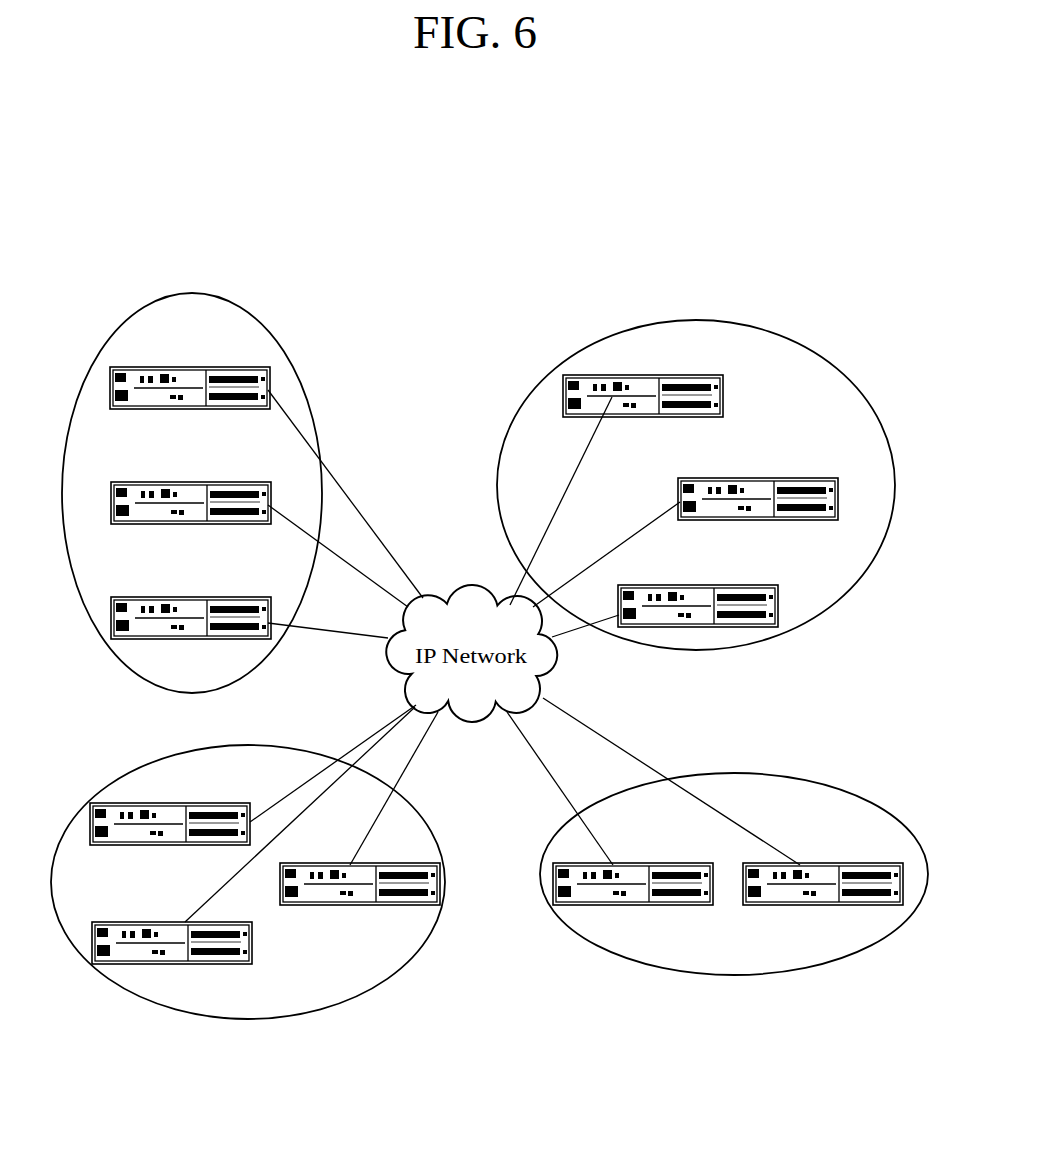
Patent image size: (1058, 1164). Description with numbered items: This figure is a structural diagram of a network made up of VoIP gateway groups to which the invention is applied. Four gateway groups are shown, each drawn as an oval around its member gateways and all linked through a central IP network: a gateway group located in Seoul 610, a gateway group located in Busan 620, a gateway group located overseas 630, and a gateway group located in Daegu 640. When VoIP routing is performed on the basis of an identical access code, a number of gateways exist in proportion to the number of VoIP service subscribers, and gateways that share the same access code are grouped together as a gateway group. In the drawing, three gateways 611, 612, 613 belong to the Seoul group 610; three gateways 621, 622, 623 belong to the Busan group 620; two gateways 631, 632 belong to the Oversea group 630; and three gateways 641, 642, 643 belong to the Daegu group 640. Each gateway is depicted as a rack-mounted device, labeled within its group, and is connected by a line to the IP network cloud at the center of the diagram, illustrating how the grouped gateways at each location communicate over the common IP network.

The Seoul gateway group 610 is at (288, 355).
The gateway 611 is at (223, 366).
The gateway 612 is at (225, 481).
The gateway 613 is at (225, 596).
The Busan gateway group 620 is at (820, 353).
The gateway 621 is at (678, 375).
The gateway 622 is at (794, 478).
The gateway 623 is at (646, 585).
The Oversea gateway group 630 is at (876, 942).
The gateway 631 is at (669, 863).
The gateway 632 is at (862, 863).
The Daegu gateway group 640 is at (420, 955).
The gateway 641 is at (206, 802).
The gateway 642 is at (115, 922).
The gateway 643 is at (386, 863).